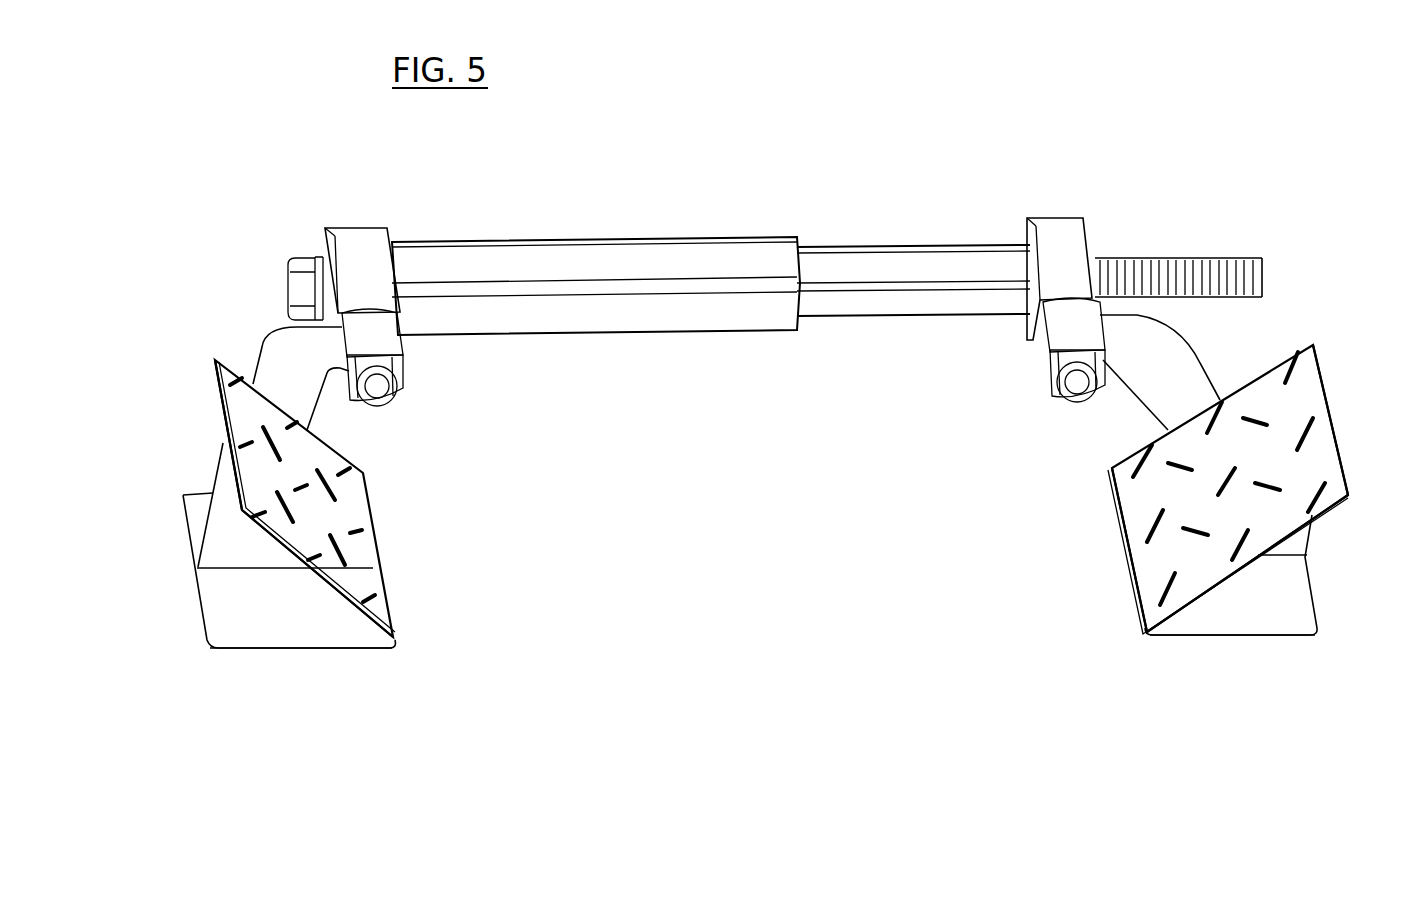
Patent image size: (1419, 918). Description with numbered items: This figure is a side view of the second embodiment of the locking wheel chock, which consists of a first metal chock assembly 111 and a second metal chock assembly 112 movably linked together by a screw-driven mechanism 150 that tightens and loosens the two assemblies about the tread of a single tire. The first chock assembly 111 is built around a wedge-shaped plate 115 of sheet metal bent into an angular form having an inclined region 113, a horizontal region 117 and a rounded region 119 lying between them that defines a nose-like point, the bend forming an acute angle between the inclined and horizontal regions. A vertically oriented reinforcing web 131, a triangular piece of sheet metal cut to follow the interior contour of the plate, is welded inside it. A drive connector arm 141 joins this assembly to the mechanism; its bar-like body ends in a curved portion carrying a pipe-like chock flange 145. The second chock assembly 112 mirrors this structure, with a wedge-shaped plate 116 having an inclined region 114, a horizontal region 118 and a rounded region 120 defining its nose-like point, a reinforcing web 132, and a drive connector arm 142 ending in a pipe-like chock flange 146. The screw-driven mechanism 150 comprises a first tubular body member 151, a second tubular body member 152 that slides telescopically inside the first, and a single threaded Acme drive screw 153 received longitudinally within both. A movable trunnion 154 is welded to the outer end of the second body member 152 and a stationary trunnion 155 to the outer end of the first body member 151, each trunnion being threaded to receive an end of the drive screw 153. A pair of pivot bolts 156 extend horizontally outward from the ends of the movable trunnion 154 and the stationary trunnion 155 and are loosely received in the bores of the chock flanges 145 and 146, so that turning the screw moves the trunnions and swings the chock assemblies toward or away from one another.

The first metal chock assembly 111 is at (1347, 377).
The second metal chock assembly 112 is at (198, 363).
The inclined region 113 is at (1312, 460).
The inclined region 114 is at (247, 420).
The wedge-shaped plate 115 is at (1243, 642).
The wedge-shaped plate 116 is at (285, 663).
The horizontal region 117 is at (1288, 612).
The horizontal region 118 is at (235, 615).
The rounded region 119 is at (1140, 600).
The rounded region 120 is at (395, 585).
The reinforcing web 131 is at (1295, 545).
The reinforcing web 132 is at (235, 540).
The drive connector arm 141 is at (1212, 356).
The drive connector arm 142 is at (265, 337).
The pipe-like chock flange 145 is at (1045, 345).
The pipe-like chock flange 146 is at (397, 340).
The screw-driven mechanism 150 is at (750, 208).
The first tubular body member 151 is at (585, 240).
The second tubular body member 152 is at (916, 245).
The threaded Acme drive screw 153 is at (1205, 258).
The movable trunnion 154 is at (1058, 218).
The stationary trunnion 155 is at (355, 228).
The pivot bolt 156 is at (1077, 383).